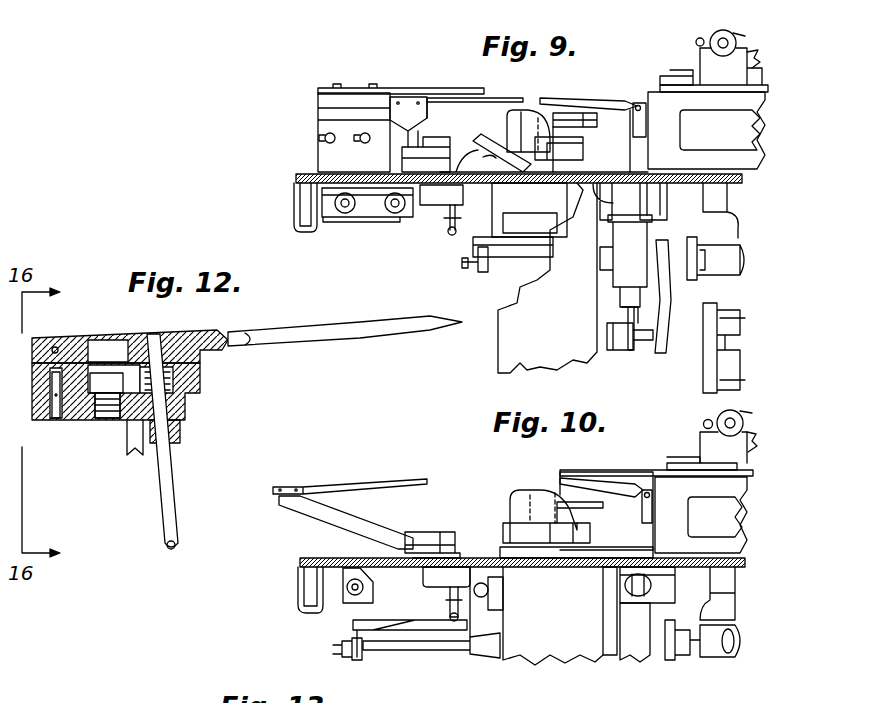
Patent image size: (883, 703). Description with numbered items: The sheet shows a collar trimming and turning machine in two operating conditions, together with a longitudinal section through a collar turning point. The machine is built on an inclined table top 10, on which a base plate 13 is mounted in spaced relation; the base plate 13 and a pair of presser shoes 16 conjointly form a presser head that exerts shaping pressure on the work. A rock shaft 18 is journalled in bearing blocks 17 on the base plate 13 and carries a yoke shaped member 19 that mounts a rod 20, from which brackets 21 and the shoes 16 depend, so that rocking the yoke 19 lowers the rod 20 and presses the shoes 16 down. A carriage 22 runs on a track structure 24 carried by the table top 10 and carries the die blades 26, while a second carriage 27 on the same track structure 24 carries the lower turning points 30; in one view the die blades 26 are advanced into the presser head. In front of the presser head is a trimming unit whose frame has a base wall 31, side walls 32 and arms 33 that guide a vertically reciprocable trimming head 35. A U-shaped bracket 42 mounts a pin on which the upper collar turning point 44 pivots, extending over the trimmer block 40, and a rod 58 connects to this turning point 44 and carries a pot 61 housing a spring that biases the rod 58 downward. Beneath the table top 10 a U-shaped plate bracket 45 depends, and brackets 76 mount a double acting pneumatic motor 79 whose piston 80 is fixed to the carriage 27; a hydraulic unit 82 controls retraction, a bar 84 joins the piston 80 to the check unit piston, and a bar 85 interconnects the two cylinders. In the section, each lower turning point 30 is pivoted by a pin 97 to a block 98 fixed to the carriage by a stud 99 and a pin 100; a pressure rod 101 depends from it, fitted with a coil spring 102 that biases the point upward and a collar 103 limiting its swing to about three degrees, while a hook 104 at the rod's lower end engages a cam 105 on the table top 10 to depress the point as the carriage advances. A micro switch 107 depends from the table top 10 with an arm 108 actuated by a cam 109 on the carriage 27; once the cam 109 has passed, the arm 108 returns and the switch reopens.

In FIG. 9, the table top 10 is at (748, 177).
In FIG. 10, the table top 10 is at (740, 558).
In FIG. 9, the base plate 13 is at (767, 92).
In FIG. 10, the base plate 13 is at (753, 476).
In FIG. 9, the presser members or shoes 16 is at (667, 80).
In FIG. 10, the presser members or shoes 16 is at (673, 462).
In FIG. 9, the bearing blocks 17 is at (737, 66).
In FIG. 10, the bearing blocks 17 is at (740, 446).
In FIG. 9, the rock shaft 18 is at (743, 37).
In FIG. 10, the rock shaft 18 is at (747, 413).
In FIG. 9, the yoke shaped member 19 is at (758, 50).
In FIG. 10, the yoke shaped member 19 is at (760, 427).
In FIG. 9, the rod 20 is at (697, 37).
In FIG. 10, the rod 20 is at (705, 417).
In FIG. 9, the brackets 21 is at (697, 50).
In FIG. 10, the brackets 21 is at (705, 440).
In FIG. 9, the carriage 22 is at (318, 112).
In FIG. 10, the carriage 22 is at (567, 490).
In FIG. 9, the track structure 24 is at (362, 220).
In FIG. 10, the track structure 24 is at (337, 607).
In FIG. 9, the die members or blades 26 is at (470, 88).
In FIG. 10, the die members or blades 26 is at (640, 470).
In FIG. 9, the second carriage 27 is at (430, 112).
In FIG. 10, the second carriage 27 is at (330, 520).
In FIG. 9, the turning points 30 is at (506, 98).
In FIG. 10, the turning points 30 is at (427, 480).
In FIG. 10, the base wall 31 is at (500, 550).
In FIG. 9, the side walls 32 is at (591, 141).
In FIG. 10, the side walls 32 is at (606, 538).
In FIG. 10, the arms 33 is at (520, 503).
In FIG. 9, the trimming head 35 is at (507, 122).
In FIG. 10, the trimming head 35 is at (513, 523).
In FIG. 9, the trimmer block 40 is at (583, 124).
In FIG. 10, the trimmer block 40 is at (573, 508).
In FIG. 9, the U-shaped bracket 42 is at (646, 125).
In FIG. 10, the U-shaped bracket 42 is at (652, 507).
In FIG. 9, the upper collar turning point 44 is at (578, 98).
In FIG. 10, the upper collar turning point 44 is at (593, 473).
In FIG. 9, the U-shaped plate bracket 45 is at (547, 278).
In FIG. 10, the U-shaped plate bracket 45 is at (553, 616).
In FIG. 9, the rods 58 is at (627, 315).
In FIG. 9, the pot 61 is at (626, 282).
In FIG. 10, the pot 61 is at (635, 632).
In FIG. 10, the brackets 76 is at (727, 583).
In FIG. 9, the double acting pneumatic motor 79 is at (715, 231).
In FIG. 10, the double acting pneumatic motor 79 is at (737, 643).
In FIG. 9, the motor piston 80 is at (518, 262).
In FIG. 10, the motor piston 80 is at (360, 655).
In FIG. 9, the hydraulic unit 82 is at (724, 348).
In FIG. 9, the bar 84 is at (620, 350).
In FIG. 9, the bar 85 is at (663, 353).
In FIG. 12, the pin 97 is at (55, 338).
In FIG. 12, the block 98 is at (200, 385).
In FIG. 12, the stud 99 is at (105, 418).
In FIG. 12, the pin 100 is at (55, 420).
In FIG. 9, the pressure rod 101 is at (405, 137).
In FIG. 12, the pressure rod 101 is at (170, 476).
In FIG. 12, the coil spring 102 is at (190, 336).
In FIG. 12, the collar 103 is at (180, 438).
In FIG. 12, the hooks 104 is at (178, 545).
In FIG. 9, the cams 105 is at (428, 140).
In FIG. 10, the cams 105 is at (432, 532).
In FIG. 9, the micro switch 107 is at (423, 215).
In FIG. 10, the micro switch 107 is at (427, 572).
In FIG. 9, the arm 108 is at (452, 236).
In FIG. 10, the arm 108 is at (450, 597).
In FIG. 9, the cam 109 is at (533, 232).
In FIG. 10, the cam 109 is at (418, 625).